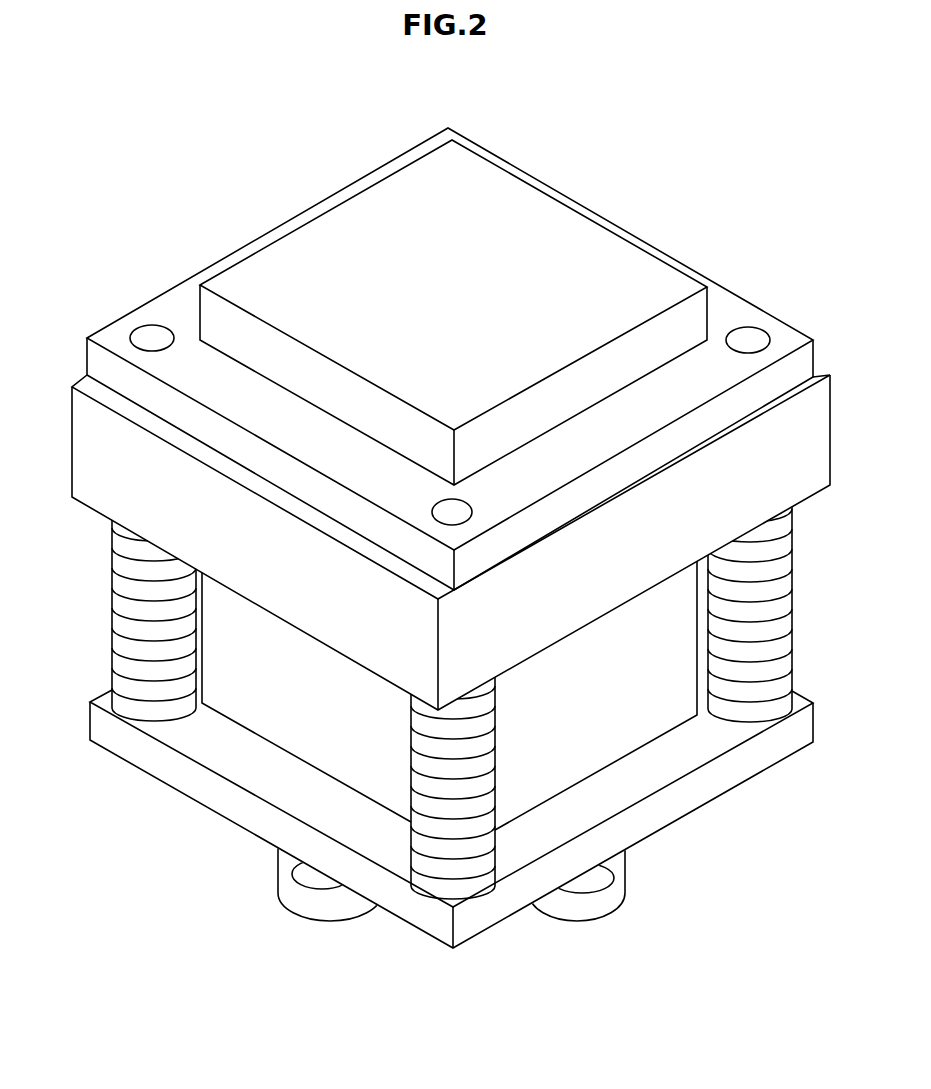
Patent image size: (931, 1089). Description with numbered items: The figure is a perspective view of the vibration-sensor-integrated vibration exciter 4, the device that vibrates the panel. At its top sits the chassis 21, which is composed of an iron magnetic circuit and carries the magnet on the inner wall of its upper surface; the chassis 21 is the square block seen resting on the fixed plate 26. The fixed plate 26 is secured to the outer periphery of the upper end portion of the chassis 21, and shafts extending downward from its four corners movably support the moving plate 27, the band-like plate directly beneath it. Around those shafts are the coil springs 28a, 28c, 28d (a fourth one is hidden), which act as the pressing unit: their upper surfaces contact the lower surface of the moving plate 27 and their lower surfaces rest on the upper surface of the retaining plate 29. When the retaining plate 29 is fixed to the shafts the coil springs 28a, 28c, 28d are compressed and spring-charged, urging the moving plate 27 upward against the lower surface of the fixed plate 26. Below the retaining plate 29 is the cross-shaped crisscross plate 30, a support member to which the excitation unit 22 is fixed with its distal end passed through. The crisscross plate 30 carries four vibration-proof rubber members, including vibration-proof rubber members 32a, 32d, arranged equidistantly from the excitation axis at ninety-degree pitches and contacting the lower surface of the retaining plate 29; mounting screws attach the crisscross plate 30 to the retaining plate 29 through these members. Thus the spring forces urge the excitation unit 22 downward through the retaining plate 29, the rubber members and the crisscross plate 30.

The vibration-sensor-integrated vibration exciter 4 is at (622, 187).
The chassis 21 is at (510, 183).
The excitation unit 22 is at (418, 940).
The fixed plate 26 is at (166, 305).
The moving plate 27 is at (80, 455).
The coil spring 28a is at (110, 603).
The coil spring 28c is at (790, 605).
The coil spring 28d is at (498, 750).
The retaining plate 29 is at (90, 722).
The crisscross plate 30 is at (318, 908).
The vibration-proof rubber member 32a is at (305, 873).
The vibration-proof rubber member 32d is at (600, 880).